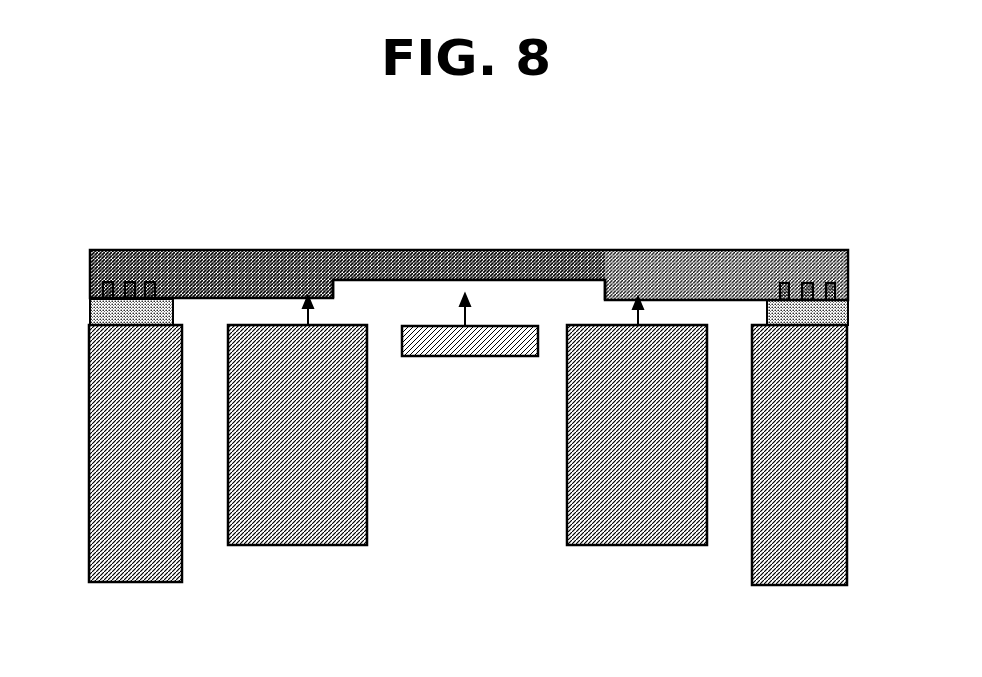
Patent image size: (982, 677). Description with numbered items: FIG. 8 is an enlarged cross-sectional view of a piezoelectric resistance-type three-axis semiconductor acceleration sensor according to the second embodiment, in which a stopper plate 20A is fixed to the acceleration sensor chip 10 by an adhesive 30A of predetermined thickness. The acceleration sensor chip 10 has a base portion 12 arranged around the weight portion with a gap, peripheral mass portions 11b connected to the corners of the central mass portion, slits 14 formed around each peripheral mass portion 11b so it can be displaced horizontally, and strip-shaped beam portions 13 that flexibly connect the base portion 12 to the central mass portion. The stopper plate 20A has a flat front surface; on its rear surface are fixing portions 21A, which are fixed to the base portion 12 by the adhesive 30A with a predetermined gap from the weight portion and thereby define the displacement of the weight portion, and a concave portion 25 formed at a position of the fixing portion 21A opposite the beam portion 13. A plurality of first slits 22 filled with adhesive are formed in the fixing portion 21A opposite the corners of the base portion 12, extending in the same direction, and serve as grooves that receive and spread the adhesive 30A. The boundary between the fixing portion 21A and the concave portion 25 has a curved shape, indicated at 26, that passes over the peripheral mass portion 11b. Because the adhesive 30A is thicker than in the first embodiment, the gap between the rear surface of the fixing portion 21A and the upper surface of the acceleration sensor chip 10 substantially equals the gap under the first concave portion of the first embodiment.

The acceleration sensor chip 10 is at (467, 488).
The peripheral mass portion 11b is at (356, 424).
The base portion 12 is at (100, 435).
The beam portion 13 is at (478, 357).
The slit 14 is at (549, 355).
The stopper plate 20A is at (469, 266).
The fixing portion 21A is at (240, 296).
The first slit 22 is at (128, 292).
The concave portion 25 is at (407, 280).
The step 26 is at (338, 282).
The adhesive 30A is at (90, 312).